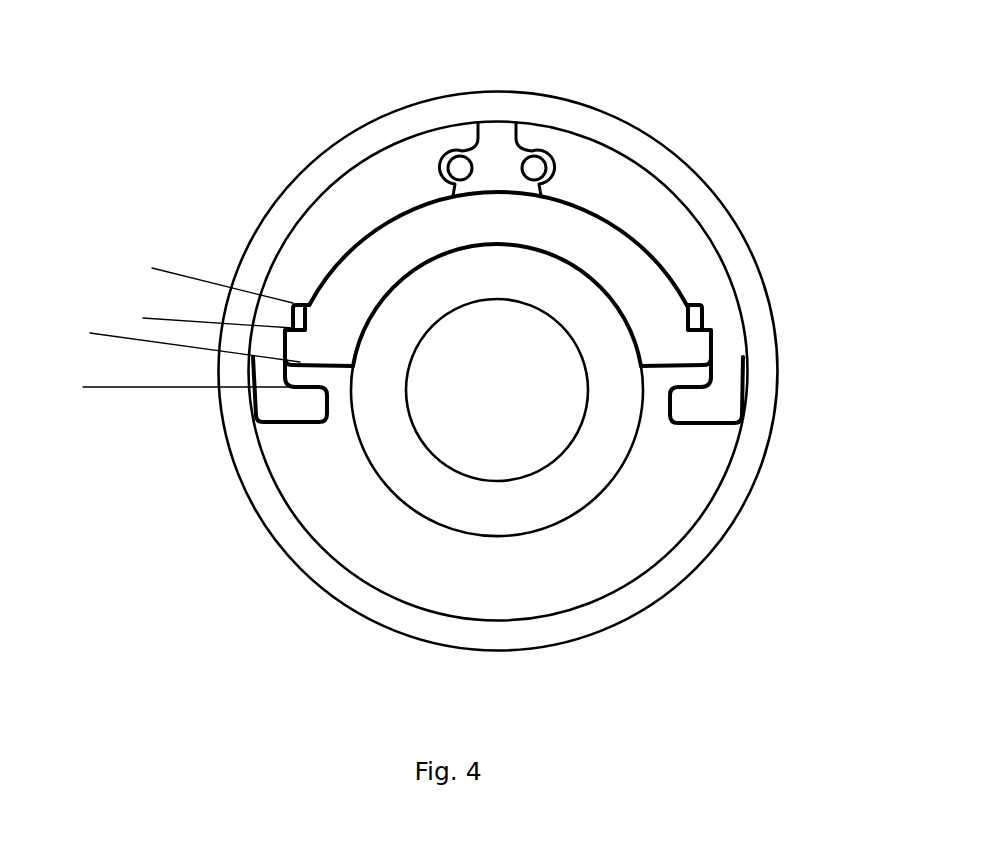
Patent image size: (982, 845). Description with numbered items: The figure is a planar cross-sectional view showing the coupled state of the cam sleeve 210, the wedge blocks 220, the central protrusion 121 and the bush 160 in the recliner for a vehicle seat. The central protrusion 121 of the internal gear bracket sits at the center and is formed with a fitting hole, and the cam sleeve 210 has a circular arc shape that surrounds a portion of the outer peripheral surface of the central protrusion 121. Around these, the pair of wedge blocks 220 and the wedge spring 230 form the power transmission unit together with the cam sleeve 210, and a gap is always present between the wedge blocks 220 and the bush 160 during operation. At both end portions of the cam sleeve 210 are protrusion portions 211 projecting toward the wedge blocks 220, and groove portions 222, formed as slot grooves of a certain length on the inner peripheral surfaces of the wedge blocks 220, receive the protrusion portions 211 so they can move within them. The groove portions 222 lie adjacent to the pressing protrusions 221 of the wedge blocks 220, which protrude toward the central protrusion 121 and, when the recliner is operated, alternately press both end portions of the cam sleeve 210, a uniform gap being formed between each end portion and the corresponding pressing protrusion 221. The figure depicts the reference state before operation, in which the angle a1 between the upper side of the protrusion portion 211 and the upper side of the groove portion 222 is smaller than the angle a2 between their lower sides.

The bush 160 is at (698, 187).
The wedge blocks 220 is at (612, 163).
The wedge spring 230 is at (473, 165).
The cam sleeve 210 is at (413, 232).
The protrusion portions 211 is at (705, 323).
The groove portions 222 is at (718, 370).
The pressing protrusions 221 is at (672, 399).
The central protrusion 121 is at (597, 478).
The angle between upper side of protrusion portion and upper side of groove portion a1 is at (153, 270).
The angle between lower side of protrusion portion and lower side of groove portion a2 is at (92, 333).